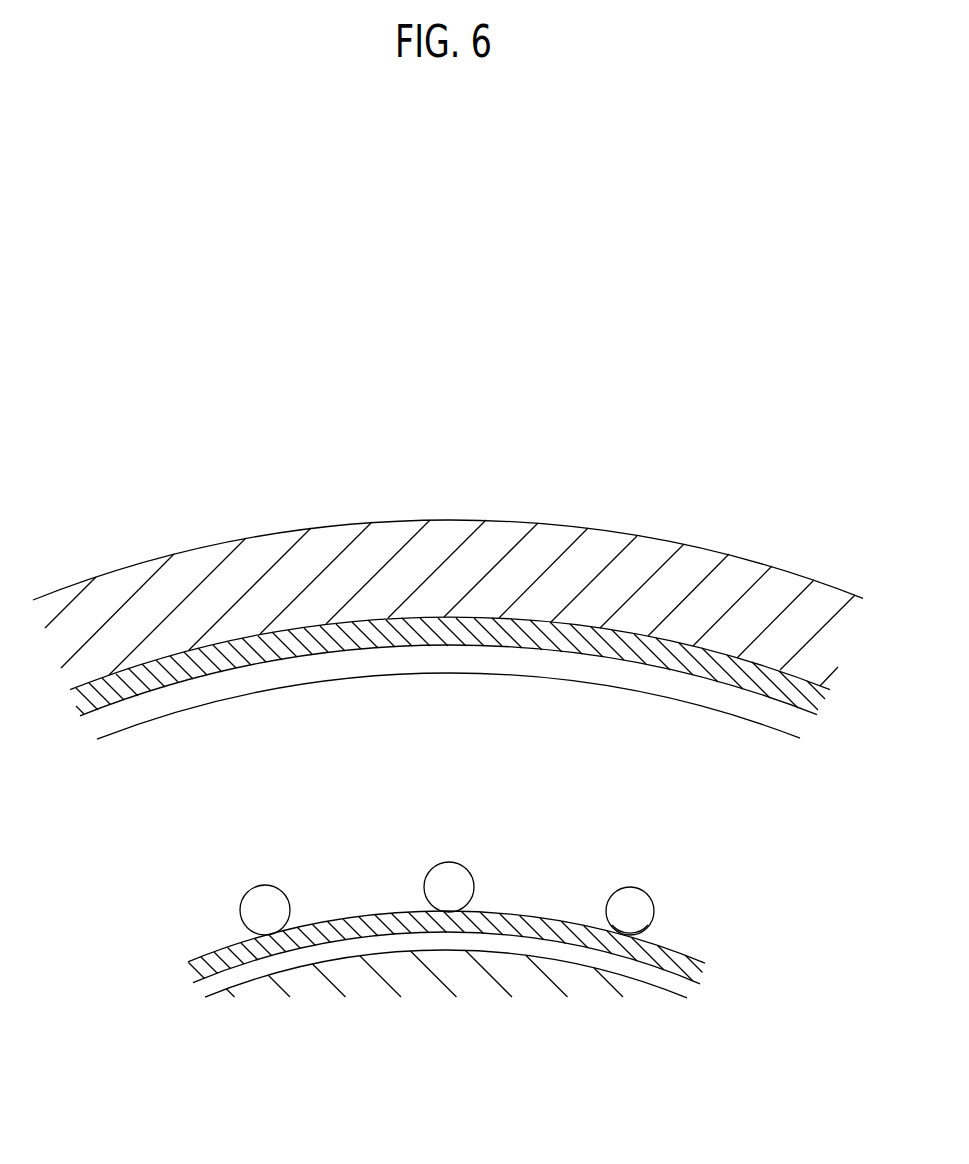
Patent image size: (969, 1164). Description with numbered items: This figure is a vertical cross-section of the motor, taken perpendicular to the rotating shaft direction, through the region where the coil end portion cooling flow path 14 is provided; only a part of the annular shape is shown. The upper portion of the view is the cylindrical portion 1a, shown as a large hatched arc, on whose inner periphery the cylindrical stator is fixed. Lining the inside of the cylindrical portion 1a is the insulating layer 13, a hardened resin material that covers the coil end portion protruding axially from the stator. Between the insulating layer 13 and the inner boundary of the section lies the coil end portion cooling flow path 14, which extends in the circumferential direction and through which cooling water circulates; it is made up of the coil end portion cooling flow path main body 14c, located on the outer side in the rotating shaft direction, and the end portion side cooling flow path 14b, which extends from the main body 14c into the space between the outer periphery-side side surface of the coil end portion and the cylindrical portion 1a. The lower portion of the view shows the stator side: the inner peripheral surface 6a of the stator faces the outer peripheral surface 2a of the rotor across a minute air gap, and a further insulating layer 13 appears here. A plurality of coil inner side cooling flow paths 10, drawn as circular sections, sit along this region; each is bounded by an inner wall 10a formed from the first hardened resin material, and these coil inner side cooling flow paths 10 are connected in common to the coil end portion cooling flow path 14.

The cylindrical portion 1a is at (193, 549).
The insulating layer 13 is at (678, 643).
The coil end portion cooling flow path 14 is at (490, 462).
The end portion side cooling flow path 14b is at (372, 665).
The coil end portion cooling flow path main body 14c is at (442, 778).
The inner peripheral surface 6a is at (340, 944).
The outer peripheral surface 2a is at (677, 990).
The coil inner side cooling flow path 10 is at (655, 903).
The inner wall 10a is at (645, 922).